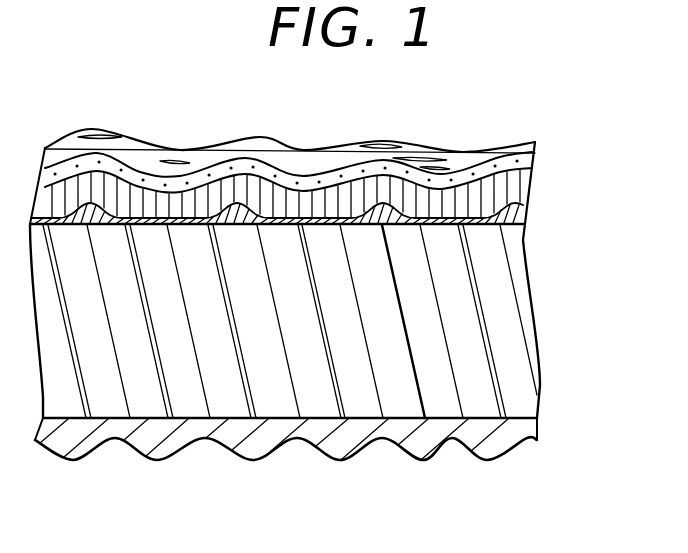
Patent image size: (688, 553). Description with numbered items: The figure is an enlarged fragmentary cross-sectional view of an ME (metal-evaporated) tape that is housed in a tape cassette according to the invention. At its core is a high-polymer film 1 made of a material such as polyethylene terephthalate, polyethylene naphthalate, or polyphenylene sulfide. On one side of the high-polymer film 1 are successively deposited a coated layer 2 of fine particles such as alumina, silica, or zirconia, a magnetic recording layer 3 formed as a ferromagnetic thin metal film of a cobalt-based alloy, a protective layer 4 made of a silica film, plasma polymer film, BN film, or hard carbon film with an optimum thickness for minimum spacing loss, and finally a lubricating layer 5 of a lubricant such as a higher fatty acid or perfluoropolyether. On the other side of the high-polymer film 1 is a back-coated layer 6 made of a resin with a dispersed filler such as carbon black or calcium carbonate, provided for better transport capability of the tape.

The high-polymer film 1 is at (517, 337).
The coated layer 2 is at (508, 212).
The magnetic recording layer 3 is at (518, 179).
The protective layer 4 is at (530, 162).
The lubricating layer 5 is at (535, 142).
The back-coated layer 6 is at (508, 445).